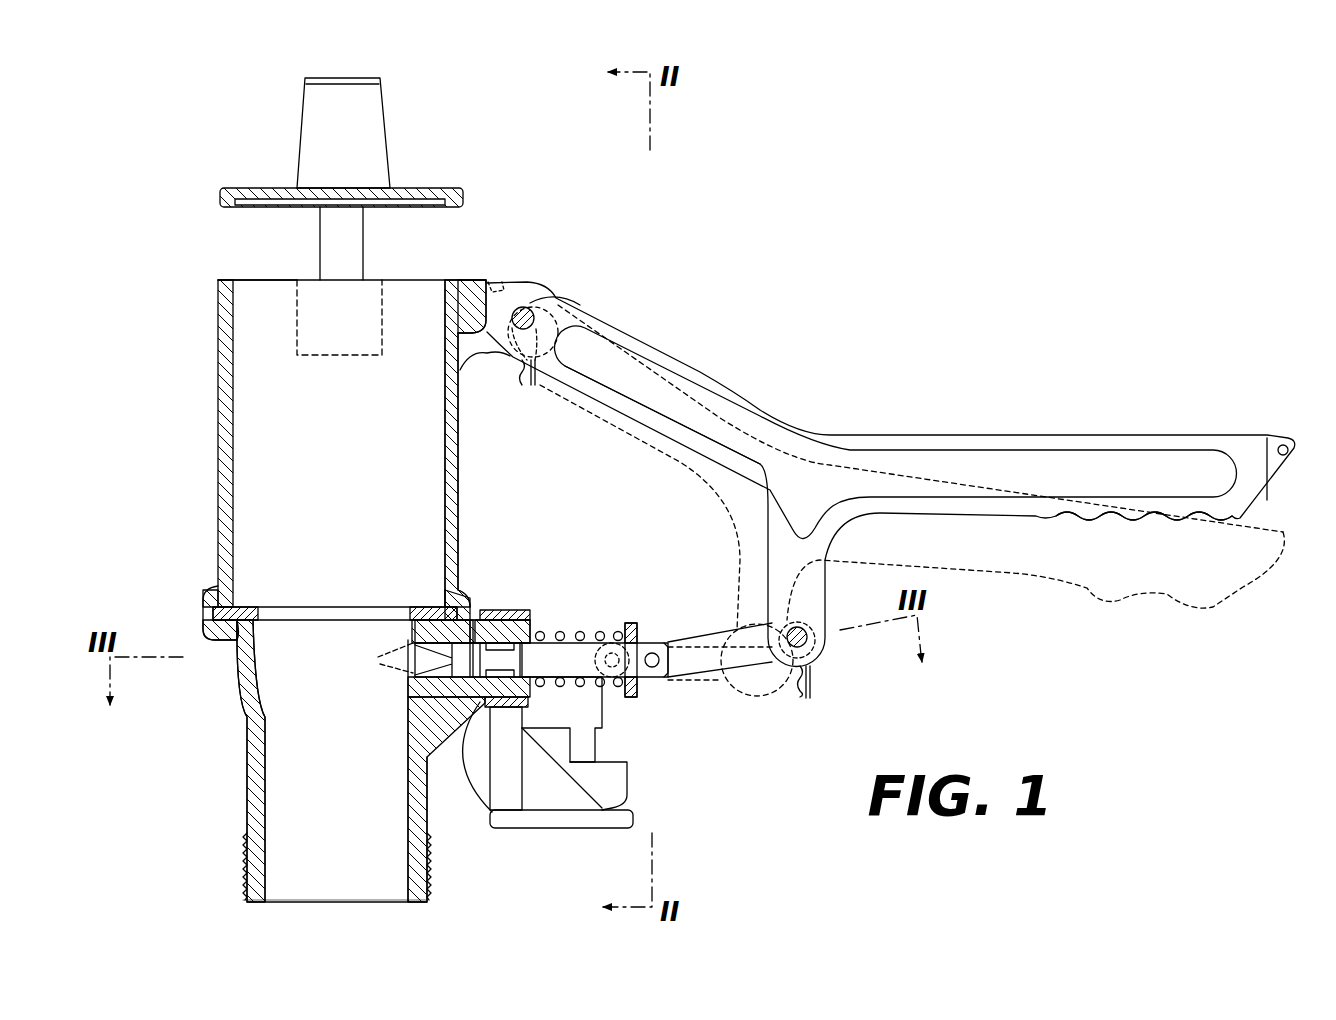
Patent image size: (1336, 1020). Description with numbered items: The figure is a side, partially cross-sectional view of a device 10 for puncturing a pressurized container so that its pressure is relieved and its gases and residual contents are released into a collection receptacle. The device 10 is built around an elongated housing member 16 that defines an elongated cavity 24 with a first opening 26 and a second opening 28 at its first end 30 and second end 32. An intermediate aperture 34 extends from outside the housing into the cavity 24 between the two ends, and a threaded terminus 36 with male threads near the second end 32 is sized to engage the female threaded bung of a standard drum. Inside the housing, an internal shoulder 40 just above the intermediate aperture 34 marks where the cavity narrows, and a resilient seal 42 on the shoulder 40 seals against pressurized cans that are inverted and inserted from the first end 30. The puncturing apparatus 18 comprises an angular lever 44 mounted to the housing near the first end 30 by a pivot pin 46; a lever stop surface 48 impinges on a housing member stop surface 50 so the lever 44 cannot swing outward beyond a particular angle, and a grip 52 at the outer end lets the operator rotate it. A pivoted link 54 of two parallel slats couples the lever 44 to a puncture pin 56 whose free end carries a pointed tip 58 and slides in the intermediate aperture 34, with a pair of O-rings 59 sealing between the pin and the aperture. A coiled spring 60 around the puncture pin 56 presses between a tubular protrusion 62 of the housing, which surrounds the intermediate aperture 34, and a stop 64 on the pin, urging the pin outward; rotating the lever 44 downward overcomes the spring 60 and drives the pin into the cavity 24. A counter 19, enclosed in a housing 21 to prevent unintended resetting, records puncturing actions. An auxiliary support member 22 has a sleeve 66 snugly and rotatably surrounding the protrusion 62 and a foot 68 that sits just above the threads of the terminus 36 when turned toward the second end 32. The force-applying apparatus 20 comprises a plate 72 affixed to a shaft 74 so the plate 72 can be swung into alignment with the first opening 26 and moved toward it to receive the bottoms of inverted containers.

The device 10 is at (566, 243).
The elongated housing member 16 is at (218, 422).
The puncturing apparatus 18 is at (772, 402).
The counter 19 is at (598, 746).
The force-applying apparatus 20 is at (393, 143).
The housing 21 is at (626, 780).
The auxiliary support member 22 is at (577, 834).
The elongated cavity 24 is at (339, 363).
The first opening 26 is at (265, 280).
The second opening 28 is at (304, 902).
The first end 30 is at (218, 280).
The second end 32 is at (246, 902).
The intermediate aperture 34 is at (410, 700).
The threaded terminus 36 is at (246, 845).
The internal shoulder 40 is at (237, 640).
The resilient seal 42 is at (258, 607).
The lever 44 is at (642, 425).
The pivot pin 46 is at (534, 305).
The lever stop surface 48 is at (484, 312).
The housing member stop surface 50 is at (496, 280).
The grip 52 is at (1192, 516).
The pivoted link 54 is at (701, 664).
The puncture pin 56 is at (565, 643).
The pointed tip 58 is at (413, 652).
The O-rings 59 is at (508, 612).
The coiled spring 60 is at (610, 643).
The tubular protrusion 62 is at (530, 700).
The stop 64 is at (632, 623).
The sleeve 66 is at (480, 620).
The foot 68 is at (528, 820).
The plate 72 is at (240, 188).
The shaft 74 is at (363, 240).